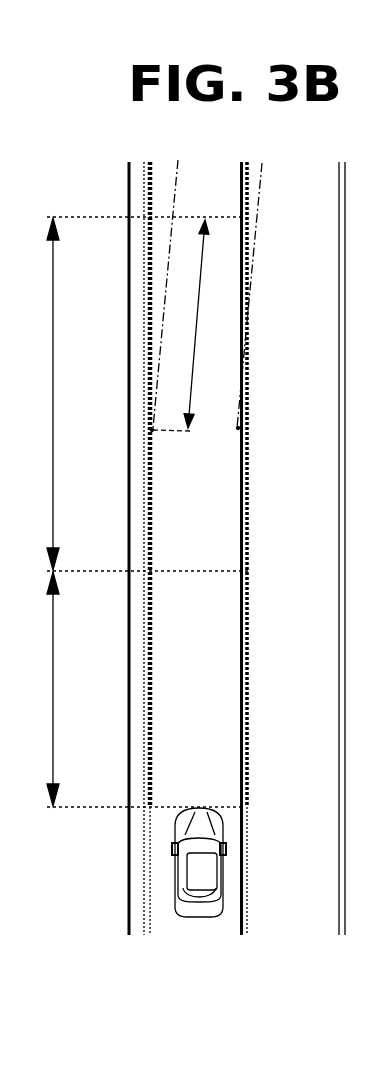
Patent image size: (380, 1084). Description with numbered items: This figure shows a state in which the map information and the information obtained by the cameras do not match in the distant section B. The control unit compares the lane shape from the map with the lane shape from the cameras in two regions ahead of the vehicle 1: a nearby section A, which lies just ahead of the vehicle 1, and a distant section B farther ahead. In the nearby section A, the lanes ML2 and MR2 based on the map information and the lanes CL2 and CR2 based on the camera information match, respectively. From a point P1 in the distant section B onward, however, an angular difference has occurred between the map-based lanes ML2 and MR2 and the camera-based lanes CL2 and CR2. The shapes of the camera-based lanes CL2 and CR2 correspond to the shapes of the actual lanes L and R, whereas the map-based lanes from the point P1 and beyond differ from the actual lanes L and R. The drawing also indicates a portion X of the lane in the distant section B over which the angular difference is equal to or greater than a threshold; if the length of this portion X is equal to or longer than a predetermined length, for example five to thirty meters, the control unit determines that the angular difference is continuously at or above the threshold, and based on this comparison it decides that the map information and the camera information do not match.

The vehicle 1 is at (223, 862).
The actual lane L is at (145, 917).
The actual lane R is at (250, 902).
The lane based on information obtained by the cameras CL2 is at (143, 287).
The lane based on information obtained by the cameras CR2 is at (250, 410).
The lane based on the map information ML2 is at (175, 195).
The lane based on the map information MR2 is at (263, 232).
The point P1 is at (238, 428).
The portion X is at (188, 325).
The nearby section A is at (44, 689).
The distant section B is at (44, 394).